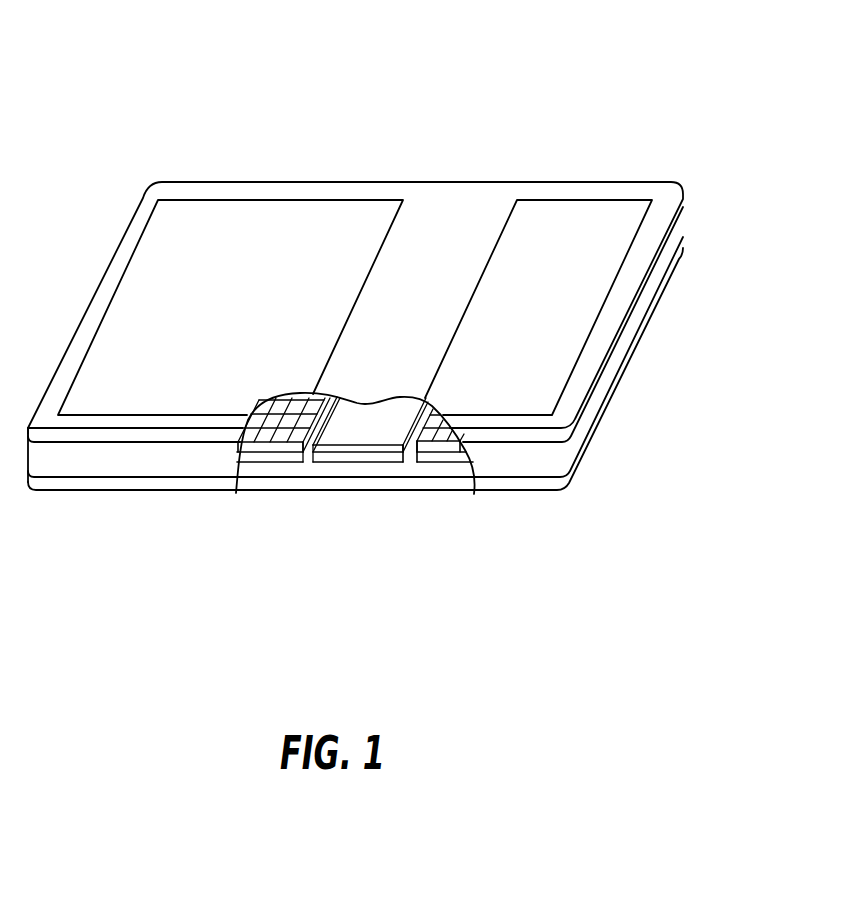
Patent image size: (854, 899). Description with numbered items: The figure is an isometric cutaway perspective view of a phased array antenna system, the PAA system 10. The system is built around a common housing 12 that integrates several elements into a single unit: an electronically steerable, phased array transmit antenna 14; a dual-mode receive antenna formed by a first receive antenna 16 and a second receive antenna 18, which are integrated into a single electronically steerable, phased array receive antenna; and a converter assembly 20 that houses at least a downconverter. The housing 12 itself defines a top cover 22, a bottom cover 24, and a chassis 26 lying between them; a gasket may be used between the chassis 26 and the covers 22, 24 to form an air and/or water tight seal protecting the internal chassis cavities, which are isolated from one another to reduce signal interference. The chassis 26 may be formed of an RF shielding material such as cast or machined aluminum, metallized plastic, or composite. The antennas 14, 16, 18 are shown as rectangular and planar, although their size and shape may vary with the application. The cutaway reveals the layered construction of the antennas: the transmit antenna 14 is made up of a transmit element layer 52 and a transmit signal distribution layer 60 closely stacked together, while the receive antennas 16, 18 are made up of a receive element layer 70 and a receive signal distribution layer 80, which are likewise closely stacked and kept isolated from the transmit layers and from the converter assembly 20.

The PAA system 10 is at (125, 74).
The common housing 12 is at (692, 220).
The transmit antenna 14 is at (550, 315).
The first receive antenna 16 is at (230, 307).
The second receive antenna 18 is at (258, 313).
The converter assembly 20 is at (386, 457).
The top cover 22 is at (131, 229).
The bottom cover 24 is at (75, 486).
The chassis 26 is at (131, 475).
The transmit element layer 52 is at (436, 447).
The transmit signal distribution layer 60 is at (470, 457).
The receive element layer 70 is at (290, 447).
The receive signal distribution layer 80 is at (268, 455).